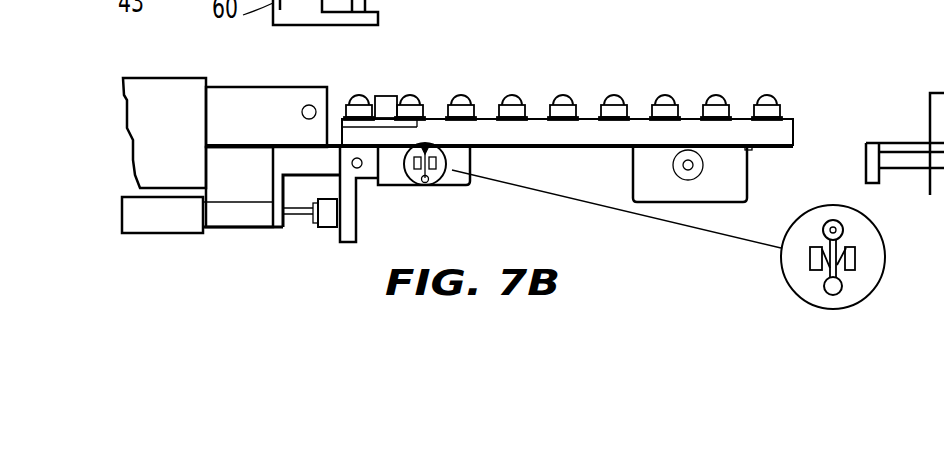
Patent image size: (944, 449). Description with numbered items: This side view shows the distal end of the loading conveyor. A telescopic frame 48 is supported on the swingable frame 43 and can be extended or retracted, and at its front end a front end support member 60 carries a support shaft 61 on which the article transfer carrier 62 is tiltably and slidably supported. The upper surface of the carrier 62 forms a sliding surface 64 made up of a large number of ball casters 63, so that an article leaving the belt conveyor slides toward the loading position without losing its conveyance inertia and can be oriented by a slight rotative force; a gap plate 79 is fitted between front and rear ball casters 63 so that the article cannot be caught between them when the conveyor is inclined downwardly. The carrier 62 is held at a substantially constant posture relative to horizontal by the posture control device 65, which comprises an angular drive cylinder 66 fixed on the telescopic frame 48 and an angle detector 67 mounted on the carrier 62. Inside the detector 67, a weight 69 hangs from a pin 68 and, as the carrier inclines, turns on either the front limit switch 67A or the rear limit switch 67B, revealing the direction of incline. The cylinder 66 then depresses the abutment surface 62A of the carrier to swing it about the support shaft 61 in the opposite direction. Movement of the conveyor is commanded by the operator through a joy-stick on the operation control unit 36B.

The operation control unit 36B is at (648, 178).
The swingable frame 43 is at (137, 140).
The telescopic frame 48 is at (225, 97).
The front end support member 60 is at (288, 163).
The support shaft 61 is at (361, 168).
The article transfer carrier 62 is at (664, 83).
The abutment surface 62A is at (338, 233).
The ball casters 63 is at (770, 97).
The sliding surface 64 is at (613, 97).
The posture control device 65 is at (307, 230).
The angular drive cylinder 66 is at (157, 221).
The angle detector 67 is at (458, 160).
The front limit switch 67A is at (810, 264).
The rear limit switch 67B is at (857, 263).
The pin 68 is at (836, 220).
The weight 69 is at (848, 249).
The gap plate 79 is at (388, 103).